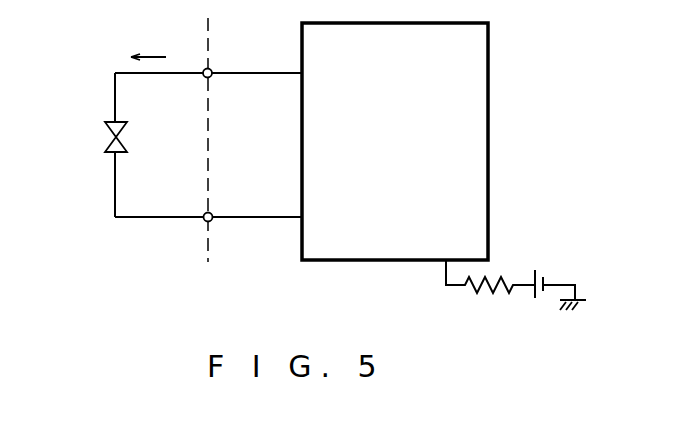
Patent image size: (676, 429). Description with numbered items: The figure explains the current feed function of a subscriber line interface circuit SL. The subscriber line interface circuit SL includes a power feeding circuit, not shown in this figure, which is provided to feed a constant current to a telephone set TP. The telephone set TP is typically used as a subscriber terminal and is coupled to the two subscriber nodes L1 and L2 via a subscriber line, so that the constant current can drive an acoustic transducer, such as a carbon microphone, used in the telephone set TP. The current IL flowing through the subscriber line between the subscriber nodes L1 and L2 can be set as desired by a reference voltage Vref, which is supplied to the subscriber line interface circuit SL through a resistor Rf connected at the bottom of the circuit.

The subscriber line interface circuit SL is at (478, 109).
The subscriber node L1 is at (223, 57).
The subscriber node L2 is at (225, 235).
The current IL is at (148, 45).
The telephone set TP is at (104, 139).
The resistor Rf is at (490, 291).
The reference voltage Vref is at (558, 277).